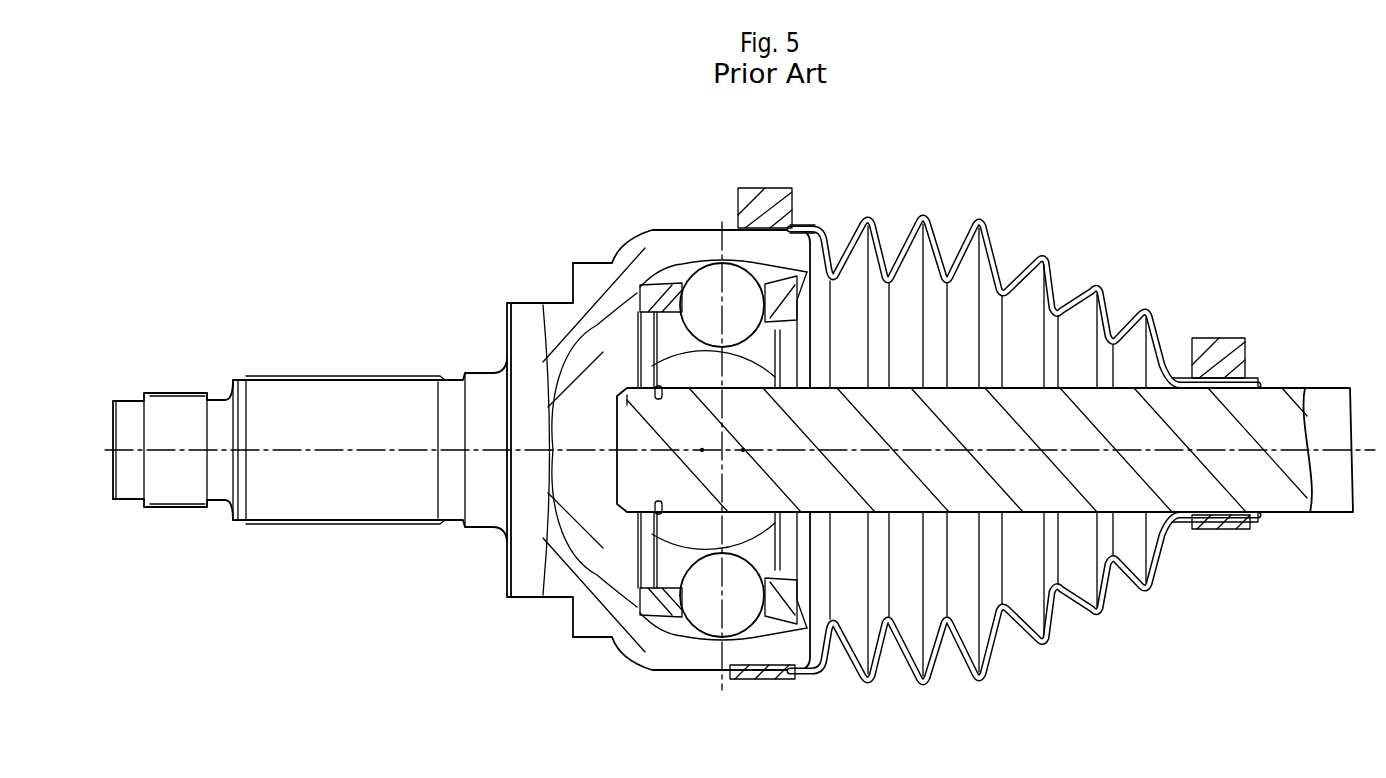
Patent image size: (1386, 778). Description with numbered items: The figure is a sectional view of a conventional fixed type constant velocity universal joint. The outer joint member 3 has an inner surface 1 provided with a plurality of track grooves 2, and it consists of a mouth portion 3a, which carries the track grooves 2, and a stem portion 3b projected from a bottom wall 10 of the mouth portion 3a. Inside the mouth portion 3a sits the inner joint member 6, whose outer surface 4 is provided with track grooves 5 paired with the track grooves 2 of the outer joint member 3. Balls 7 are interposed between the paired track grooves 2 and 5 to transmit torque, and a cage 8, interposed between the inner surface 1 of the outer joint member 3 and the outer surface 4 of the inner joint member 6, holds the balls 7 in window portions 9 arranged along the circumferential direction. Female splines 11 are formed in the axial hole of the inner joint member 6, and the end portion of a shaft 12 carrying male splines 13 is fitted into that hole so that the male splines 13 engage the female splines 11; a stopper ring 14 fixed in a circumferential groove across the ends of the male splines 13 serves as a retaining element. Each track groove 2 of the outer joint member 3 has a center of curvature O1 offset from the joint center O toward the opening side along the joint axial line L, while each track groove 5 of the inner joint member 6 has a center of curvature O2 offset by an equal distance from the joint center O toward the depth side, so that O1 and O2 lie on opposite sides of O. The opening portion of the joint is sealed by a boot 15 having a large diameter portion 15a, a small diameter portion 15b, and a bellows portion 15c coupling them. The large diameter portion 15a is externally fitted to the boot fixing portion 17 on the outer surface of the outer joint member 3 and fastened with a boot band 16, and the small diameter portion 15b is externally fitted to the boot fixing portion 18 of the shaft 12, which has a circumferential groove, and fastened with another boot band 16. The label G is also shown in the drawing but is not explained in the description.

The inner surface 1 is at (665, 650).
The track grooves 2 is at (690, 280).
The outer joint member 3 is at (663, 228).
The mouth portion 3a is at (640, 650).
The stem portion 3b is at (330, 400).
The outer surface 4 is at (638, 300).
The track grooves 5 is at (782, 548).
The inner joint member 6 is at (772, 362).
The balls 7 is at (713, 275).
The cage 8 is at (800, 582).
The window portions 9 is at (690, 635).
The bottom wall 10 is at (527, 585).
The female splines 11 is at (686, 510).
The shaft 12 is at (1322, 385).
The male splines 13 is at (650, 376).
The stopper ring 14 is at (633, 408).
The boot 15 is at (985, 222).
The large diameter portion 15a is at (795, 222).
The small diameter portion 15b is at (1196, 340).
The bellows portion 15c is at (1062, 630).
The boot band 16 is at (750, 188).
The boot fixing portion 17 is at (750, 680).
The boot fixing portion 18 is at (1242, 530).
The joint center O is at (743, 455).
The center of curvature O1 is at (745, 450).
The center of curvature O2 is at (702, 450).
The joint axial line L is at (977, 449).
The center of gravity G is at (565, 525).